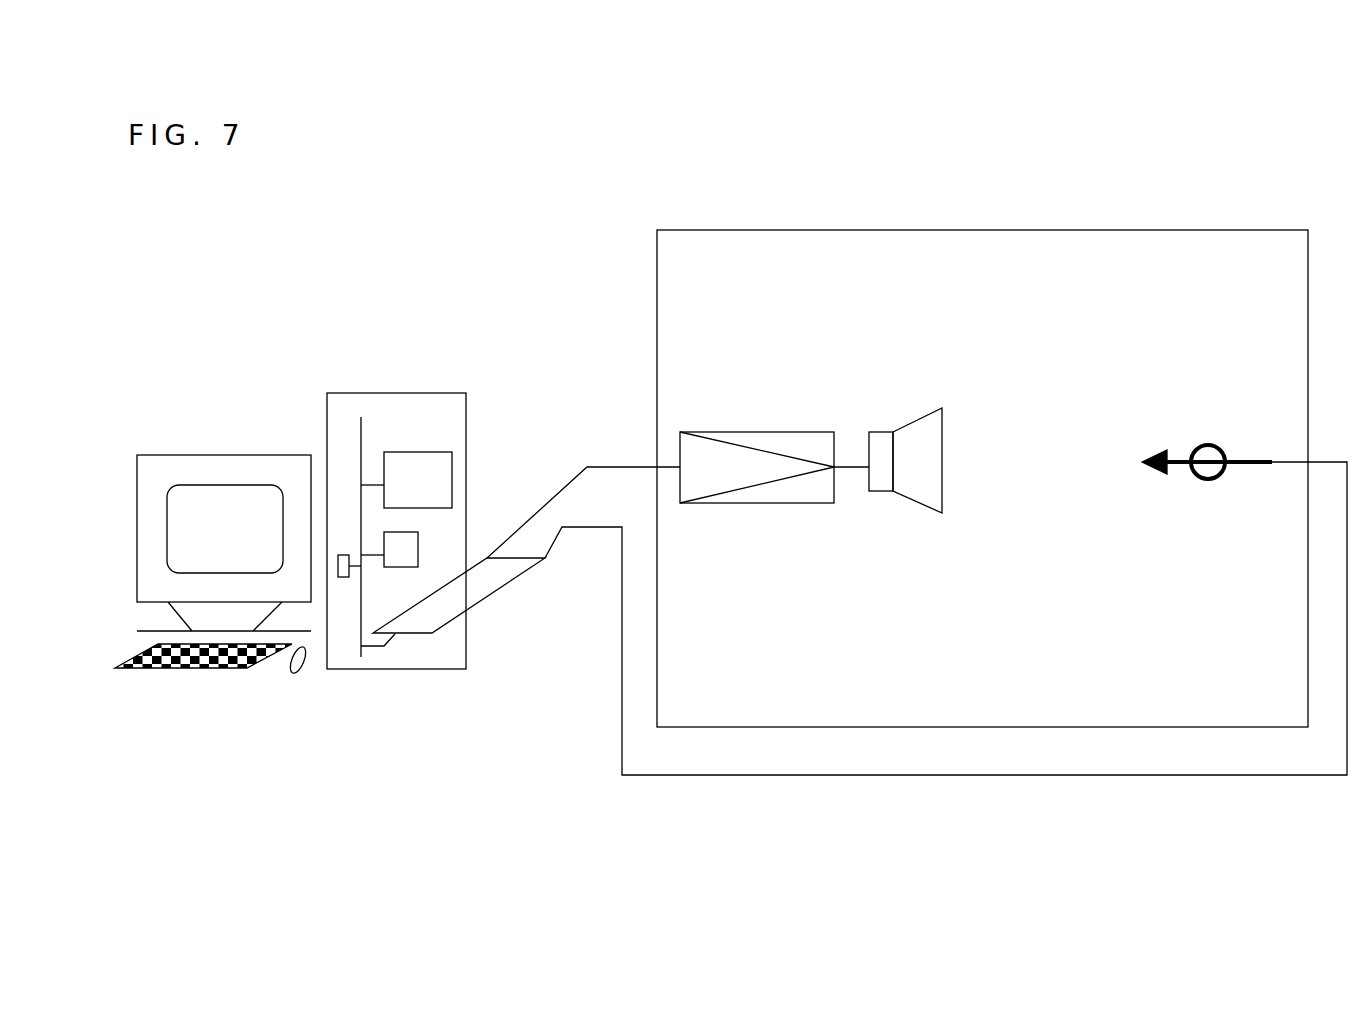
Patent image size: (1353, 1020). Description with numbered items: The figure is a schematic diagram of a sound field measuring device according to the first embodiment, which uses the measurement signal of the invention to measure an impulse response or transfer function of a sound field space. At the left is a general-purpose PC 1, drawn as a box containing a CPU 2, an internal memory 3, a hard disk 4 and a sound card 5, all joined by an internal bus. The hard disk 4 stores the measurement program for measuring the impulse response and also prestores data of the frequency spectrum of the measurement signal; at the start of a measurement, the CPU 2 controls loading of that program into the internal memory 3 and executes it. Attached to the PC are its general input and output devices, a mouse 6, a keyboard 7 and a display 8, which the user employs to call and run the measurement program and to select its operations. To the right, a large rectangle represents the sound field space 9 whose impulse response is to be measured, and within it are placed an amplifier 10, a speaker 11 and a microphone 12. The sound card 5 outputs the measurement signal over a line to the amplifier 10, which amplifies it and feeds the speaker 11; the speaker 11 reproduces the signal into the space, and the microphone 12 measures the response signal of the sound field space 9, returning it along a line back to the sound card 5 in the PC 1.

The general-purpose PC 1 is at (343, 393).
The CPU 2 is at (343, 577).
The internal memory 3 is at (418, 547).
The hard disk 4 is at (437, 452).
The sound card 5 is at (512, 573).
The mouse 6 is at (296, 674).
The keyboard 7 is at (192, 668).
The display 8 is at (152, 452).
The sound field space 9 is at (1177, 230).
The amplifier 10 is at (798, 432).
The speaker 11 is at (928, 408).
The microphone 12 is at (1175, 460).